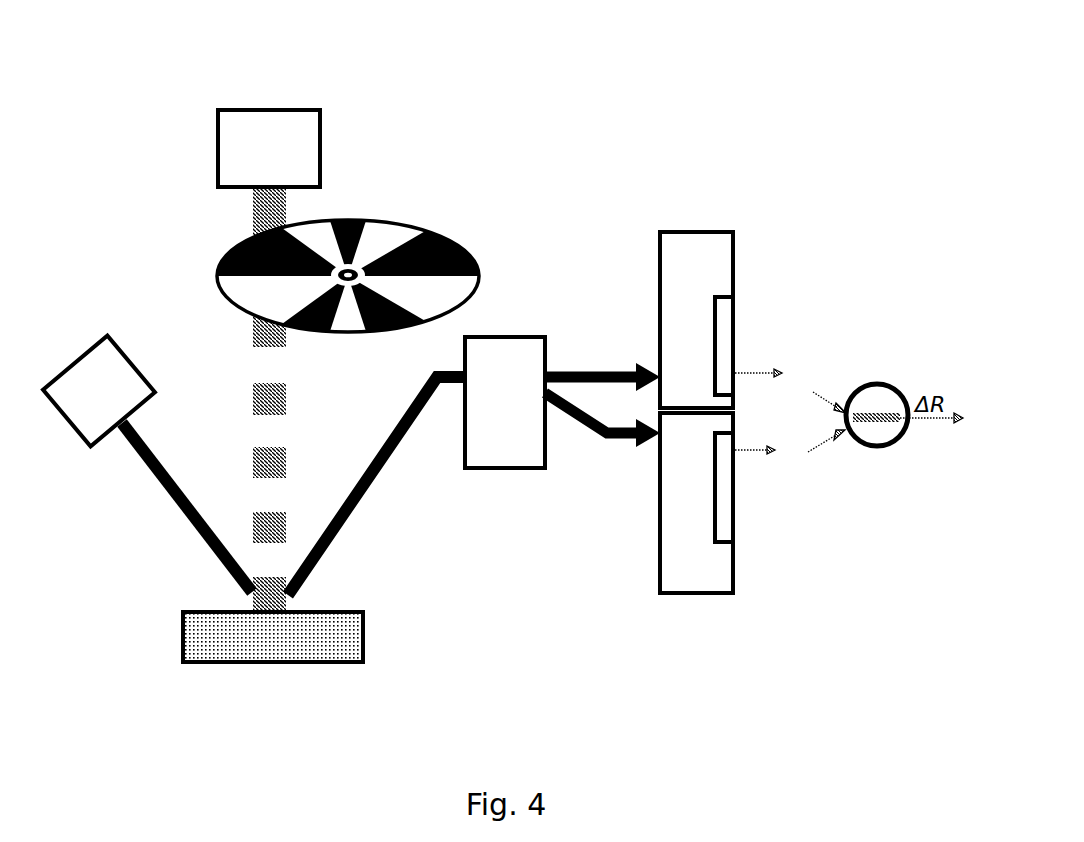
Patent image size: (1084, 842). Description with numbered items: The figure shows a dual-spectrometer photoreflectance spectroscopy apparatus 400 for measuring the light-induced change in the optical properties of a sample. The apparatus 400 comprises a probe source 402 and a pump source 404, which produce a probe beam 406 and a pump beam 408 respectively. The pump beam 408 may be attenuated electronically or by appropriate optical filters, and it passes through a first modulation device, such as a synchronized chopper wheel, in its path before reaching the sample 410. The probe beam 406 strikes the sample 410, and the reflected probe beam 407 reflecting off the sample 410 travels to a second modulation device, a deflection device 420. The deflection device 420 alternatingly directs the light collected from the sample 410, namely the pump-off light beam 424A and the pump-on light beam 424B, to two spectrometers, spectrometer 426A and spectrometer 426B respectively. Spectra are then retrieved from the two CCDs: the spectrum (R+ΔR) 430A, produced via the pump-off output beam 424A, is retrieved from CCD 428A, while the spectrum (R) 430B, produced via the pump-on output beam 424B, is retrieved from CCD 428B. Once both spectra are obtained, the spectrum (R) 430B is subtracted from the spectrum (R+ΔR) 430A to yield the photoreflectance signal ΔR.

The photoreflectance spectroscopy apparatus 400 is at (657, 82).
The probe source 402 is at (75, 358).
The pump source 404 is at (218, 147).
The probe beam 406 is at (200, 510).
The reflected probe beam 407 is at (342, 500).
The pump beam 408 is at (253, 213).
The sample 410 is at (183, 633).
The deflection device 420 is at (500, 335).
The pump off light beam 424A is at (582, 373).
The pump on light beam 424B is at (578, 423).
The spectrometer 426A is at (697, 228).
The spectrometer 426B is at (697, 595).
The CCD 428A is at (735, 367).
The CCD 428B is at (733, 462).
The spectrum (R+ΔR) 430A is at (807, 368).
The spectrum (R) 430B is at (822, 470).